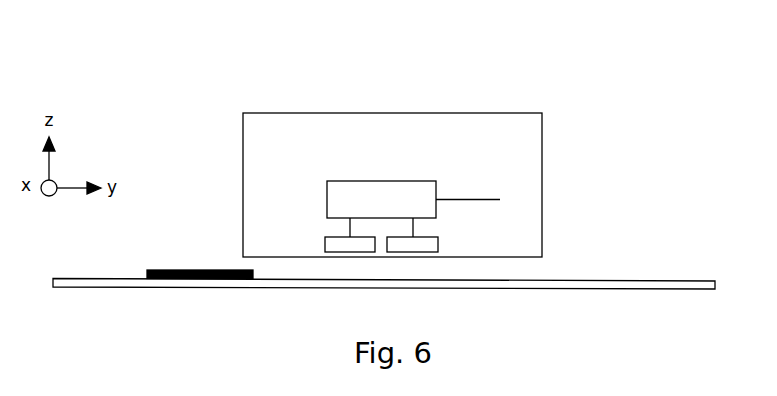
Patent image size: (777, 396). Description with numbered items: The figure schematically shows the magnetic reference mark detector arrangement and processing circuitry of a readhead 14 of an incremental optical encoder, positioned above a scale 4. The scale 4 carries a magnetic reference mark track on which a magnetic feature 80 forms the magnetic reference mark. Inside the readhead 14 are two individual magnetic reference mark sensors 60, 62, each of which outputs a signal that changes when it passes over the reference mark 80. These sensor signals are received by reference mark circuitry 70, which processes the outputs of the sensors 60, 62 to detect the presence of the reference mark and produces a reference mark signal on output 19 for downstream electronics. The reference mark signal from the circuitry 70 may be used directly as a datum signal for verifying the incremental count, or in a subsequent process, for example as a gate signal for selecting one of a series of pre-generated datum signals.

The scale 4 is at (97, 278).
The magnetic feature 80 is at (180, 270).
The readhead 14 is at (382, 113).
The reference mark circuitry 70 is at (371, 212).
The output 19 is at (460, 198).
The magnetic reference mark sensor 60 is at (325, 242).
The magnetic reference mark sensor 62 is at (438, 242).